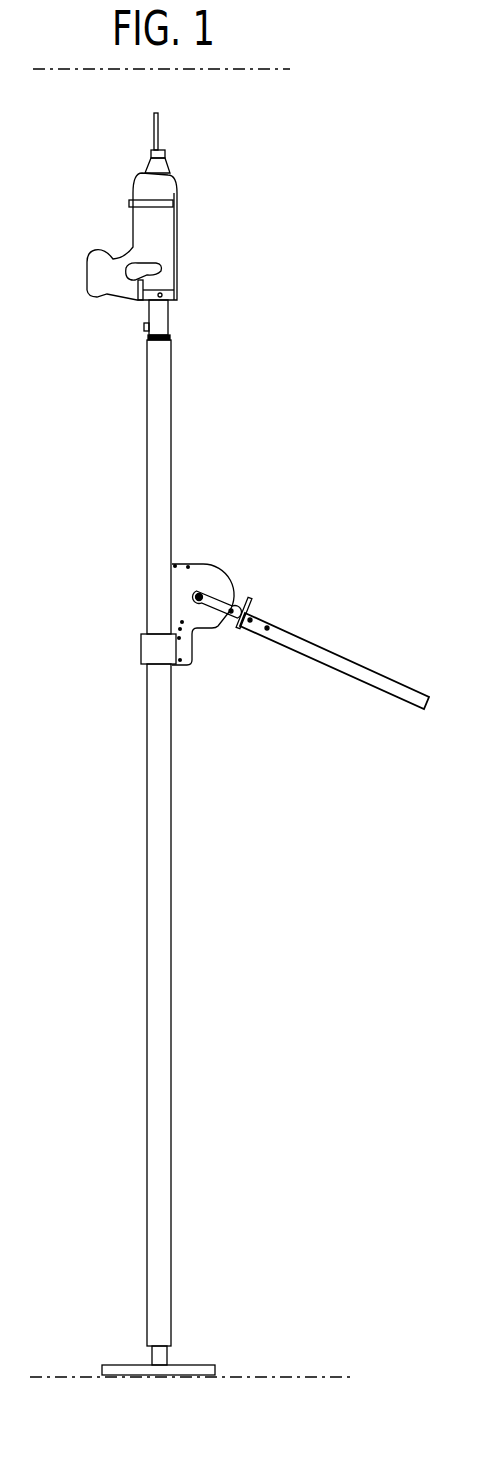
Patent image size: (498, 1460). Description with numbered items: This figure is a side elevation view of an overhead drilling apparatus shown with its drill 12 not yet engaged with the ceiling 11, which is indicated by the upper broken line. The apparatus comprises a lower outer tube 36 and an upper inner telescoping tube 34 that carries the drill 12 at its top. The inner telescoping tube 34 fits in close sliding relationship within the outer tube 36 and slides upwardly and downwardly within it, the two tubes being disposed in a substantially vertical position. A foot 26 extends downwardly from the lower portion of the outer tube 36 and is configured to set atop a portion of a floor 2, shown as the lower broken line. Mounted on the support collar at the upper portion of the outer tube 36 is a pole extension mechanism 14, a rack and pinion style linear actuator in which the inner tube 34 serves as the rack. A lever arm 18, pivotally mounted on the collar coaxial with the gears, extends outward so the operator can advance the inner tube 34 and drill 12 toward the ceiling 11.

The ceiling 11 is at (87, 70).
The drill 12 is at (162, 245).
The pole extension mechanism 14 is at (243, 510).
The lever arm 18 is at (344, 662).
The upper inner telescoping tube 34 is at (159, 494).
The lower outer tube 36 is at (152, 906).
The foot 26 is at (173, 1368).
The floor 2 is at (278, 1377).